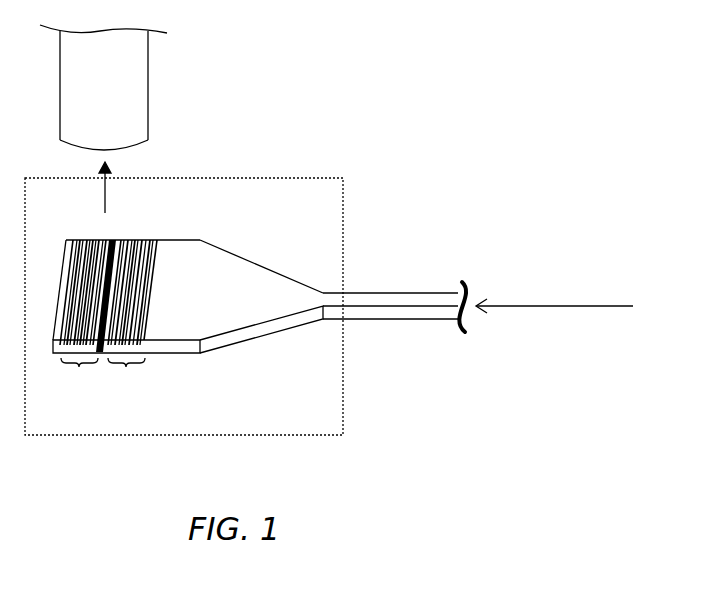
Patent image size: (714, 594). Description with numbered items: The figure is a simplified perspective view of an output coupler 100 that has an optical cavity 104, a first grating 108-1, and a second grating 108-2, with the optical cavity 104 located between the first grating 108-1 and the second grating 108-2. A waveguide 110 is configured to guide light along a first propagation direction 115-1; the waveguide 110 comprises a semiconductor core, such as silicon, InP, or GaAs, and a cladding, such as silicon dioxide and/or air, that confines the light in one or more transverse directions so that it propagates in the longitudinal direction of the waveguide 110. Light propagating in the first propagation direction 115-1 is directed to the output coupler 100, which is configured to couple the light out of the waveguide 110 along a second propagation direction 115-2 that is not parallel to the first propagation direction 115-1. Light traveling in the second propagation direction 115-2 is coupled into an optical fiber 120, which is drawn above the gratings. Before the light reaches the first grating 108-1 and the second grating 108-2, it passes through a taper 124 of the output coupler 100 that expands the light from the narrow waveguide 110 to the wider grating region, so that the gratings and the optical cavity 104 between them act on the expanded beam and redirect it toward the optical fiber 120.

The output coupler 100 is at (298, 178).
The optical cavity 104 is at (115, 243).
The first grating 108-1 is at (78, 367).
The second grating 108-2 is at (127, 366).
The waveguide 110 is at (380, 293).
The first propagation direction 115-1 is at (539, 306).
The second propagation direction 115-2 is at (107, 184).
The optical fiber 120 is at (146, 100).
The taper 124 is at (240, 263).